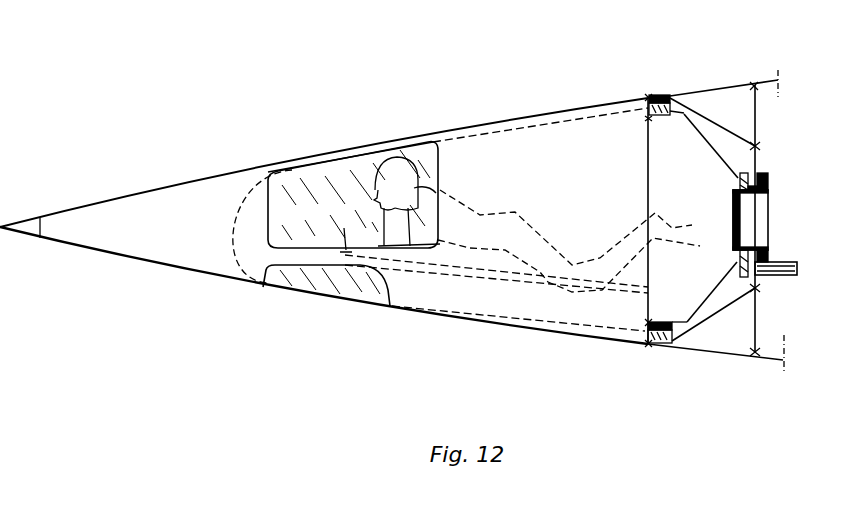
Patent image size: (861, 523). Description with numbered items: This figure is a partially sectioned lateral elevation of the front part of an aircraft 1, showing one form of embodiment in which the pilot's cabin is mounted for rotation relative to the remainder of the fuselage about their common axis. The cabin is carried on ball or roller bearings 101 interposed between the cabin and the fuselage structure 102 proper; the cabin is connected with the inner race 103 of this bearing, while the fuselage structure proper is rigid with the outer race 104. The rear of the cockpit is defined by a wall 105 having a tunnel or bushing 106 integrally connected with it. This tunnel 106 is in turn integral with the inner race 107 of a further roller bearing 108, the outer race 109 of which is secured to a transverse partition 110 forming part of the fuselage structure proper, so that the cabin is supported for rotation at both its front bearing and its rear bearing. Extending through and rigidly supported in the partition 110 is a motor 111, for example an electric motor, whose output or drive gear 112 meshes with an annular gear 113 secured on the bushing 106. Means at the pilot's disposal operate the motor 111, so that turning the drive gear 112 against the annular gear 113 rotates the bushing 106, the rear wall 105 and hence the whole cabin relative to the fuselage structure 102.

The aircraft fuselage 1 is at (721, 357).
The ball or roller bearings 101 is at (648, 96).
The fuselage structure 102 is at (710, 87).
The inner race 103 is at (648, 112).
The outer race 104 is at (664, 94).
The wall 105 is at (712, 144).
The tunnel or bushing 106 is at (755, 248).
The inner race 107 is at (770, 193).
The roller bearing 108 is at (770, 179).
The outer race 109 is at (758, 173).
The transverse partition 110 is at (753, 108).
The motor 111 is at (795, 275).
The output or drive gear 112 is at (738, 266).
The annular gear 113 is at (732, 182).